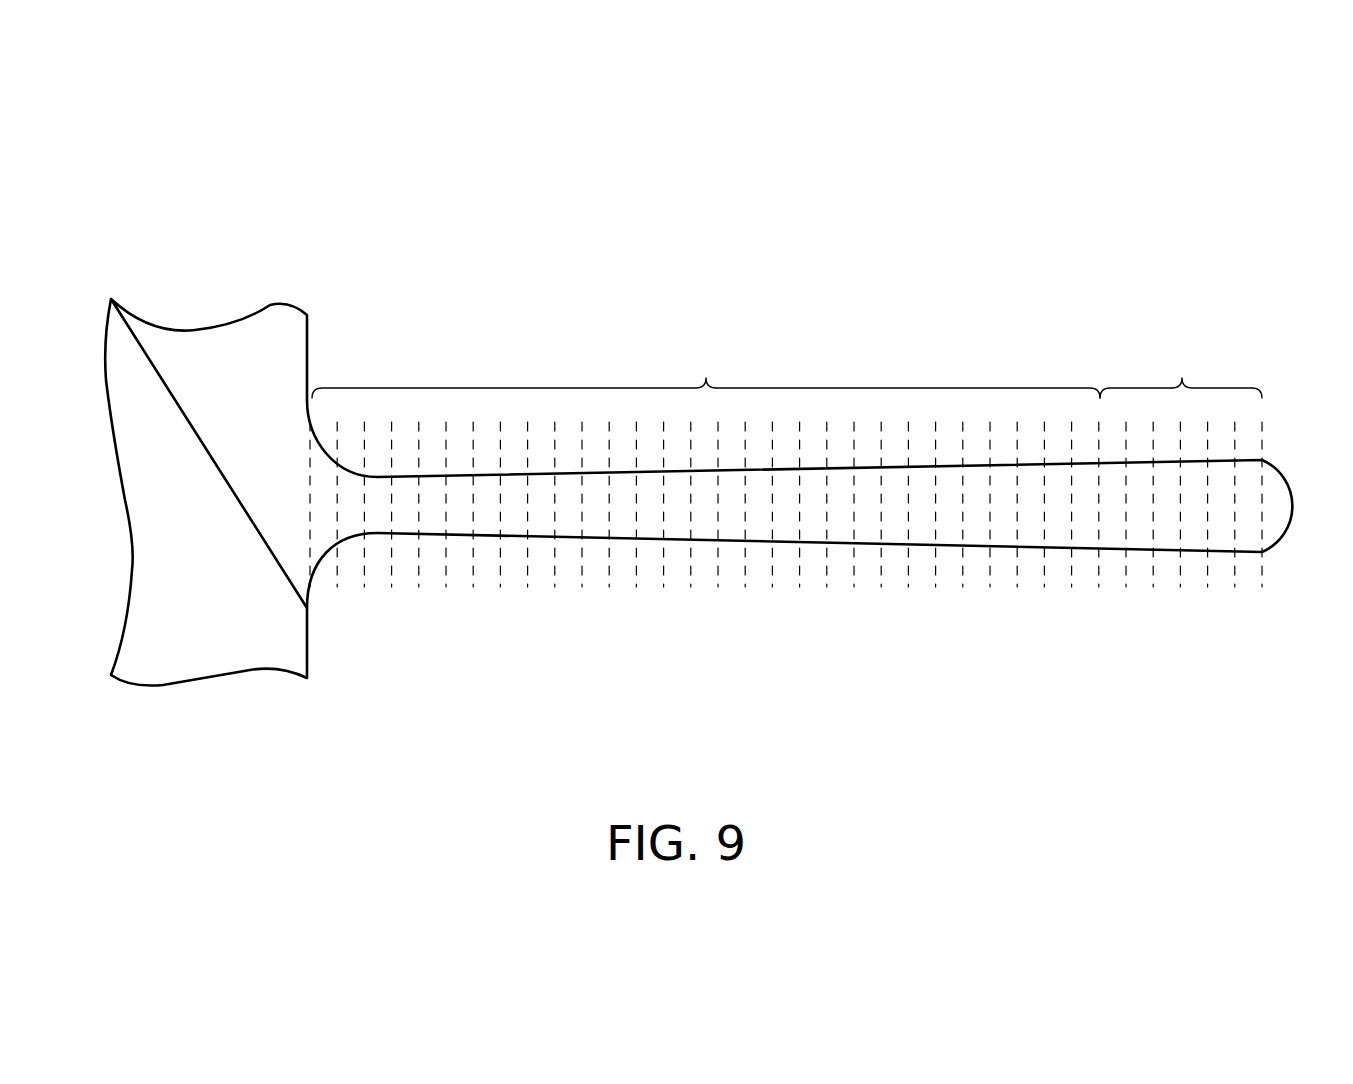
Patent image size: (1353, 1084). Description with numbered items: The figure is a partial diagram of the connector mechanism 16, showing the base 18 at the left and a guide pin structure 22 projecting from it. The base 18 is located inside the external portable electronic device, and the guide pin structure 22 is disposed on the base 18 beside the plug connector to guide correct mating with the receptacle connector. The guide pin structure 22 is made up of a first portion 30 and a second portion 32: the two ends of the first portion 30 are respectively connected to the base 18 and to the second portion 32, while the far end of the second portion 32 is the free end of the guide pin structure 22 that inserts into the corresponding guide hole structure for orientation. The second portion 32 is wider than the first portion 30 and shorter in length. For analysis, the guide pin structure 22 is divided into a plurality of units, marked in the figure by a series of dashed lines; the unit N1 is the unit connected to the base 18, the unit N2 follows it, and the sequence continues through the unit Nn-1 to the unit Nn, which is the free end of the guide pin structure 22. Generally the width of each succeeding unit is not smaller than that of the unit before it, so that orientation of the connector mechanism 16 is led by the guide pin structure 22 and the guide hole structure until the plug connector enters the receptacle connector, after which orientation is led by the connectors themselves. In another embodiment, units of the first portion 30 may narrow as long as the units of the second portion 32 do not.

The connector mechanism 16 is at (689, 425).
The base 18 is at (155, 488).
The guide pin structure 22 is at (799, 500).
The first portion 30 is at (705, 522).
The second portion 32 is at (1189, 524).
The unit N1 is at (318, 533).
The unit N2 is at (346, 522).
The unit Nn-1 is at (1223, 537).
The unit Nn is at (1243, 537).